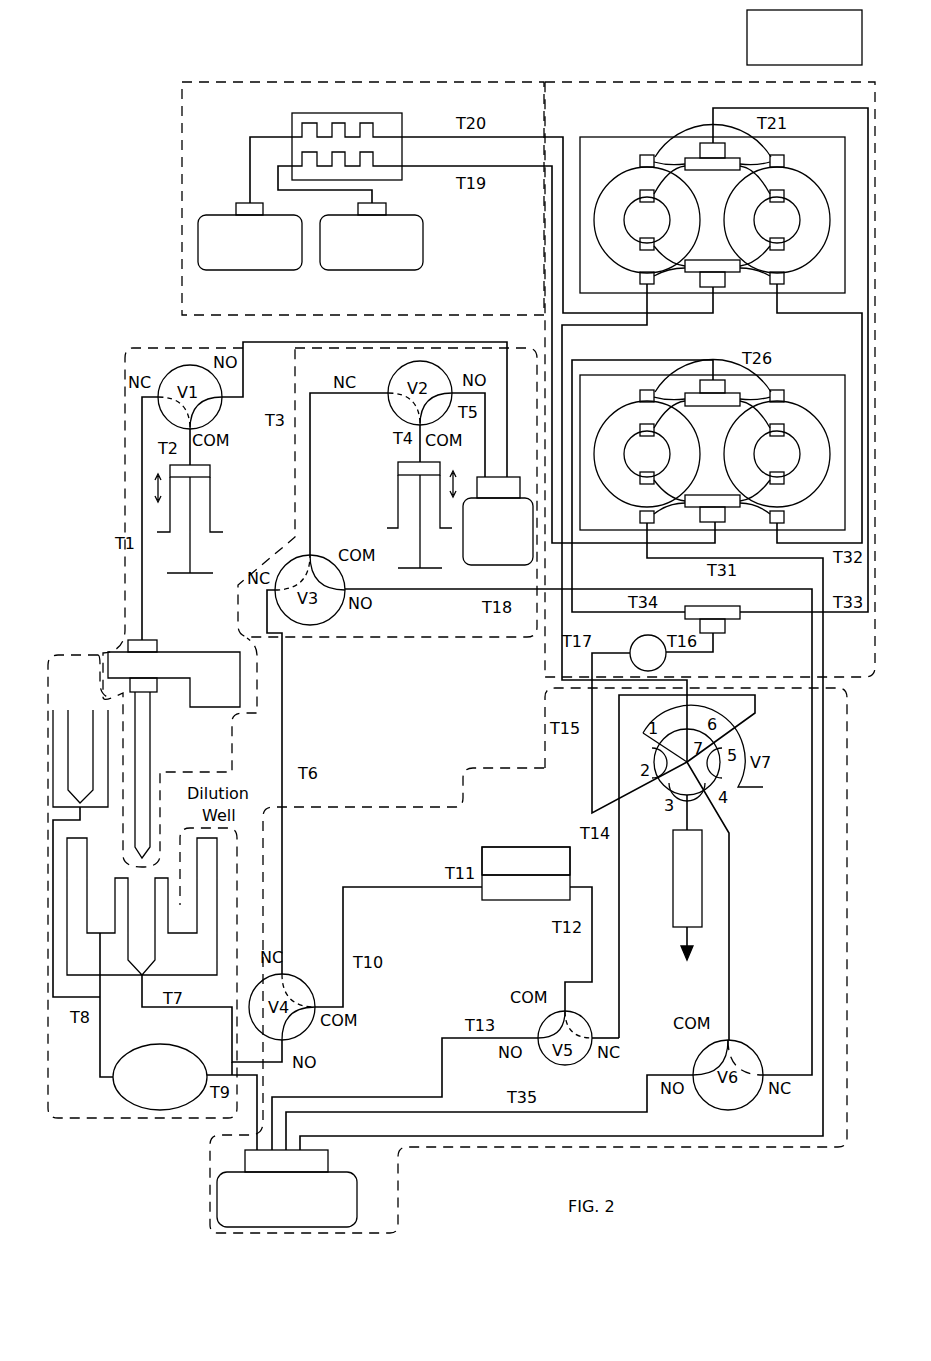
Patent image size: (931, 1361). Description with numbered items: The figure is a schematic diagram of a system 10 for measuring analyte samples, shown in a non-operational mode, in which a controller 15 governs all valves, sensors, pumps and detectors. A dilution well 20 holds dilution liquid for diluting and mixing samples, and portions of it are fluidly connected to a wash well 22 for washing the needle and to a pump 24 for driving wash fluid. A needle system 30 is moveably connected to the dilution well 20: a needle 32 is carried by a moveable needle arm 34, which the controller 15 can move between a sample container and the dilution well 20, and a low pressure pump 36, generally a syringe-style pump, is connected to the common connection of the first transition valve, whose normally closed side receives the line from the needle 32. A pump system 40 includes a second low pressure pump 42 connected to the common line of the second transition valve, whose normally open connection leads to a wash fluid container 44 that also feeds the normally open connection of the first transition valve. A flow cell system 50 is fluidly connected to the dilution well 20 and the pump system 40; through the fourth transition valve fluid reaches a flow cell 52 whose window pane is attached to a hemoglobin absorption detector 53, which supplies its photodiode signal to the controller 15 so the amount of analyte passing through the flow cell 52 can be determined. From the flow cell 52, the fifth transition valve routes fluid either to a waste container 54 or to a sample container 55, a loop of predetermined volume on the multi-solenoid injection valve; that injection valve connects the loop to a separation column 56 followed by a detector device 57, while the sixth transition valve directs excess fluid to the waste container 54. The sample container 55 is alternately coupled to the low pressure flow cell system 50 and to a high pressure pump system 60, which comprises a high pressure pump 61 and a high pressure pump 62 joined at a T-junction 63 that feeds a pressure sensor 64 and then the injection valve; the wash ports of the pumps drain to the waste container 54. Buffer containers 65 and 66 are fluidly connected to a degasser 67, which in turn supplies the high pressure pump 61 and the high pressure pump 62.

The system 10 is at (244, 72).
The controller 15 is at (804, 37).
The dilution well 20 is at (102, 1120).
The wash well 22 is at (80, 734).
The pump 24 is at (148, 1077).
The needle system 30 is at (123, 456).
The needle 32 is at (175, 775).
The needle arm 34 is at (174, 673).
The low pressure pump 36 is at (219, 516).
The pump system 40 is at (400, 637).
The low pressure pump 42 is at (384, 497).
The wash fluid container 44 is at (498, 521).
The flow cell system 50 is at (847, 887).
The flow cell 52 is at (526, 886).
The hemoglobin absorption detector (HAD) 53 is at (526, 861).
The waste container 54 is at (300, 1188).
The sample container 55 is at (763, 787).
The separation column 56 is at (669, 879).
The detector device 57 is at (680, 965).
The high pressure pump system 60 is at (855, 675).
The high pressure pump 61 is at (704, 191).
The high pressure pump 62 is at (712, 428).
The T-junction 63 is at (727, 639).
The pressure sensor 64 is at (648, 653).
The buffer container 65 is at (250, 203).
The buffer container 66 is at (350, 218).
The degasser 67 is at (323, 135).